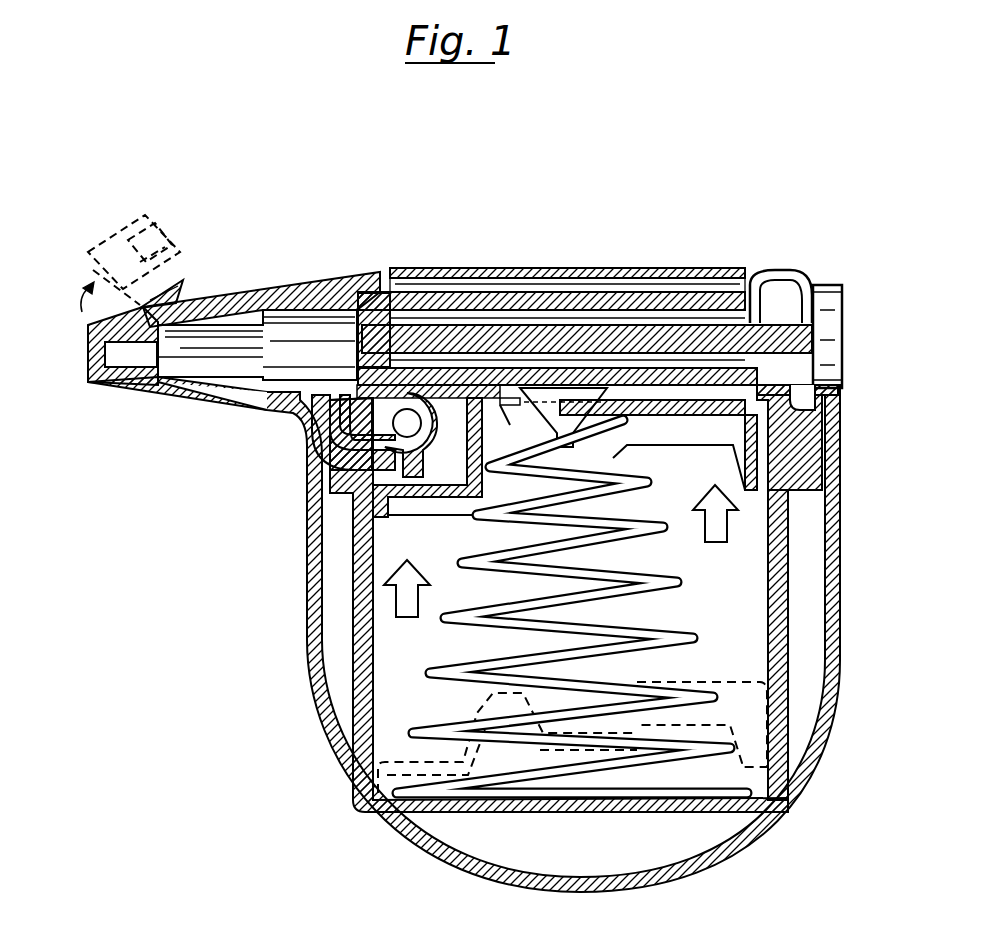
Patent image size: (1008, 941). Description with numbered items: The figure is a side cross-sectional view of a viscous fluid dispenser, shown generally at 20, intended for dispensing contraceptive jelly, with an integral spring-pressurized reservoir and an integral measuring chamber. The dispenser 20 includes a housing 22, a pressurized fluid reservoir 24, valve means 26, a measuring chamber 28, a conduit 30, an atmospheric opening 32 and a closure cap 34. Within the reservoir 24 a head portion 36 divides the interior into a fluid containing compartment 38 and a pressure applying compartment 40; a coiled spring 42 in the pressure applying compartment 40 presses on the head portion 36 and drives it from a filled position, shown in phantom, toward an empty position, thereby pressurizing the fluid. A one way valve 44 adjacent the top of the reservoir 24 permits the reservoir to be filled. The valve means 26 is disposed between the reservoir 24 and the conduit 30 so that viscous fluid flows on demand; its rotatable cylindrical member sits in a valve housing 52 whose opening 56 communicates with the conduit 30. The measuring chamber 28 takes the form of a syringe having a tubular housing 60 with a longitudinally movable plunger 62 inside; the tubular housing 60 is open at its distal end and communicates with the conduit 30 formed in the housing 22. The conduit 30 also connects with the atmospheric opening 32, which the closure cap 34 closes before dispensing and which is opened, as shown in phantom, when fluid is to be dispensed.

The dispenser 20 is at (364, 221).
The housing 22 is at (313, 643).
The pressurized fluid reservoir 24 is at (722, 607).
The valve means 26 is at (305, 505).
The measuring chamber 28 is at (447, 307).
The conduit 30 is at (277, 337).
The atmospheric opening 32 is at (133, 387).
The closure cap 34 is at (93, 327).
The head portion 36 is at (780, 467).
The fluid containing compartment 38 is at (612, 395).
The pressure applying compartment 40 is at (390, 698).
The coiled spring 42 is at (717, 700).
The one way valve 44 is at (560, 447).
The valve housing 52 is at (330, 433).
The opening 56 is at (293, 393).
The tubular housing 60 is at (697, 297).
The plunger 62 is at (740, 312).